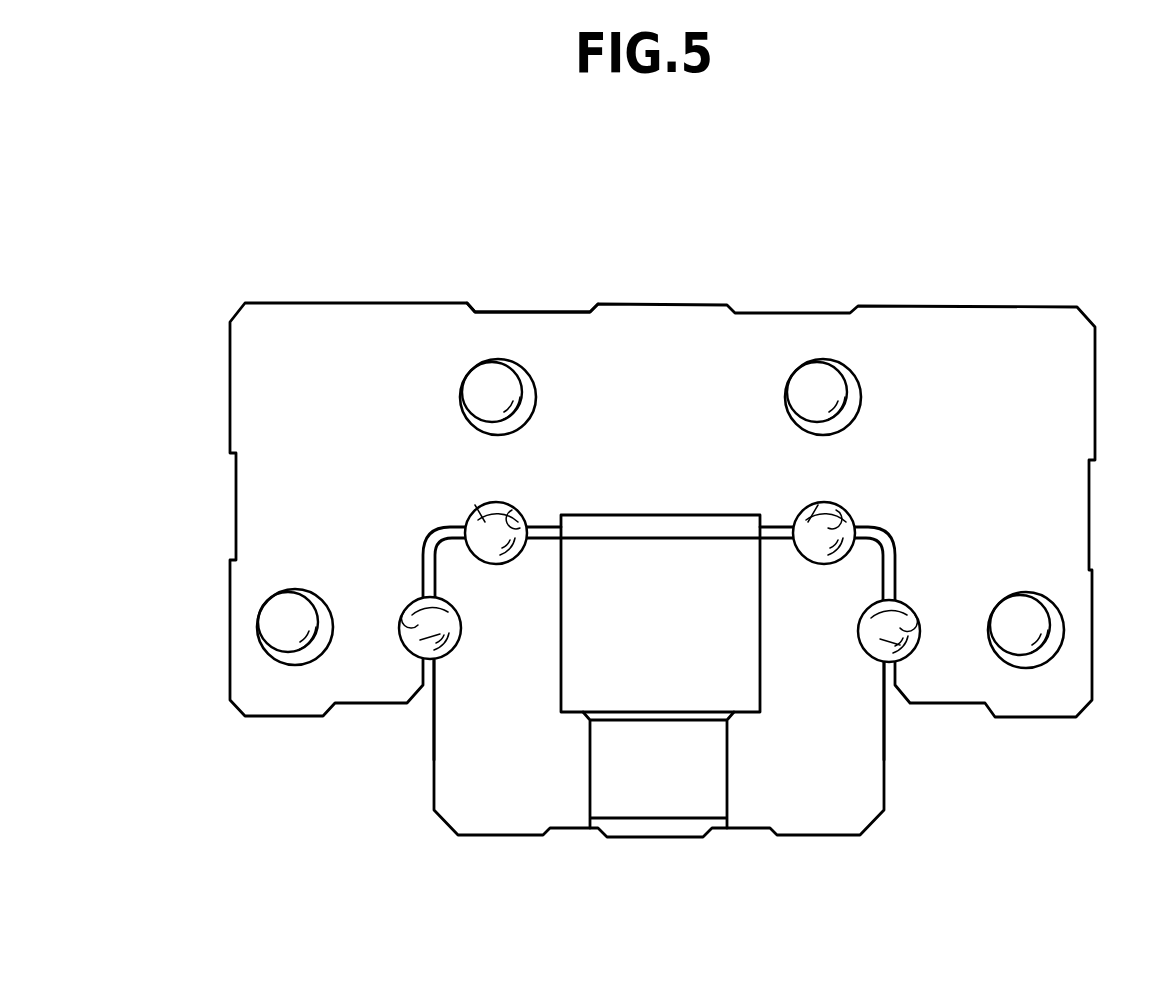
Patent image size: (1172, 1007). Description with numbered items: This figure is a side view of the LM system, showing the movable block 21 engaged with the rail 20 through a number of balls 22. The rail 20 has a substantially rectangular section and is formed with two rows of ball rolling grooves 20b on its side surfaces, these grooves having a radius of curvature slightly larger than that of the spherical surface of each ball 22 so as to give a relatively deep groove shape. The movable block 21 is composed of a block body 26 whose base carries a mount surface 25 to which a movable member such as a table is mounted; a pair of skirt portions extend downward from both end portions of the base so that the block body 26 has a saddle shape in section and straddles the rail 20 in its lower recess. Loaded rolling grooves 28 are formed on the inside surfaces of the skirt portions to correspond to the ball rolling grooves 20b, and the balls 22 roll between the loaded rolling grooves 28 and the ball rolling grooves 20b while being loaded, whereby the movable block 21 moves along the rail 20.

The rail 20 is at (490, 866).
The ball rolling groove 20b is at (442, 660).
The movable block 21 is at (1034, 274).
The ball 22 is at (485, 522).
The mount surface 25 is at (305, 302).
The block body 26 is at (526, 298).
The loaded rolling groove 28 is at (520, 525).